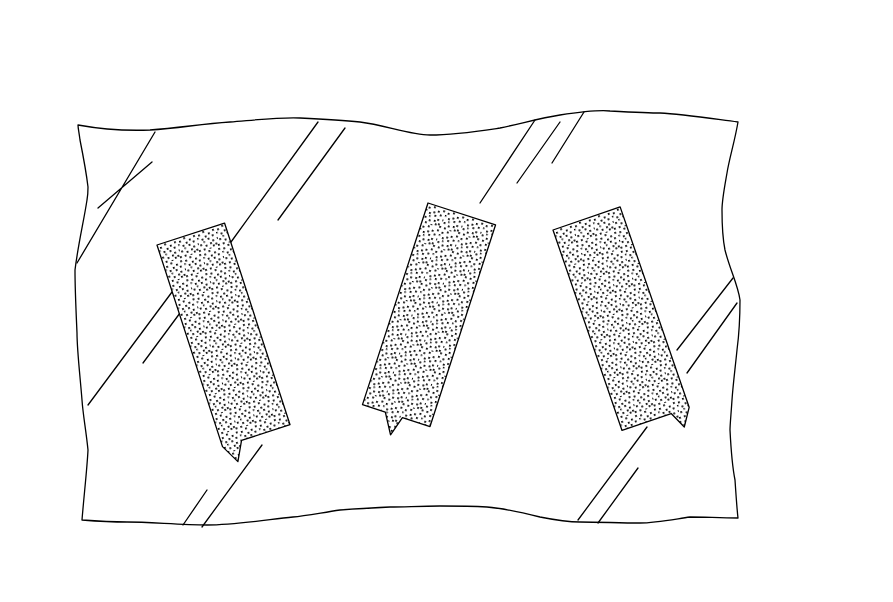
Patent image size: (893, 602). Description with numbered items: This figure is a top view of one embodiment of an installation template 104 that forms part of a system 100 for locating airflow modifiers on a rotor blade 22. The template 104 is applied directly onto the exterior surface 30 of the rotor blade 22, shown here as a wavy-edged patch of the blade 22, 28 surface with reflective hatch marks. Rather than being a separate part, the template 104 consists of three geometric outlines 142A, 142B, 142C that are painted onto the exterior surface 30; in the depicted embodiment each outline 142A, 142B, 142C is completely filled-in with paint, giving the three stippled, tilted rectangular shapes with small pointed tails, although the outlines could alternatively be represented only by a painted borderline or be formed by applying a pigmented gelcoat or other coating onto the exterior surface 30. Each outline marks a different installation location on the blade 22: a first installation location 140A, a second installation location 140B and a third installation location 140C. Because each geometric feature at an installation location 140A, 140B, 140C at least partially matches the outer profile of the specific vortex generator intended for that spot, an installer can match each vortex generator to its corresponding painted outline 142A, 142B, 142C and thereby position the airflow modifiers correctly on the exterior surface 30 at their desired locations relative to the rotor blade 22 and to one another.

The system 100 is at (128, 88).
The installation template 104 is at (387, 150).
The exterior surface 30 is at (583, 140).
The rotor blade 22 is at (657, 146).
The panel portion 28 is at (407, 319).
The geometric outline 142A is at (261, 325).
The geometric outline 142B is at (407, 268).
The geometric outline 142C is at (573, 298).
The first installation location 140A is at (228, 344).
The second installation location 140B is at (426, 324).
The third installation location 140C is at (605, 322).